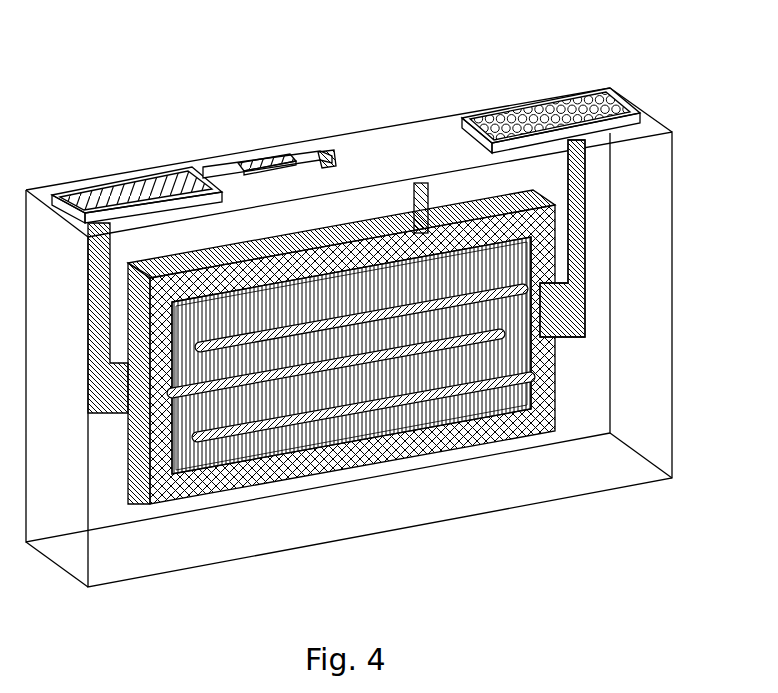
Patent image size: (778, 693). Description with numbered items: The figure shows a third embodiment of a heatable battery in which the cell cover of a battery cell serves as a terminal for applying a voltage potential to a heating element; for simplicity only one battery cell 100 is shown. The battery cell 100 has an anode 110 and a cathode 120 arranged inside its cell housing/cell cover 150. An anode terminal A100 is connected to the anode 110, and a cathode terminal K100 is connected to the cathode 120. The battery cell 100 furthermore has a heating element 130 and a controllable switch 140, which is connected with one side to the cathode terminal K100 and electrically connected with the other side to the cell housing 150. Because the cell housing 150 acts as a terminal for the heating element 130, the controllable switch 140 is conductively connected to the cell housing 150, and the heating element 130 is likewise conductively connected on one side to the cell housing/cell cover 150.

The battery cell 100 is at (637, 98).
The anode 110 is at (550, 368).
The cathode 120 is at (126, 463).
The heating element 130 is at (377, 462).
The controllable switch 140 is at (272, 157).
The cell housing/cell cover 150 is at (333, 157).
The cathode terminal K100 is at (123, 173).
The anode terminal A100 is at (540, 97).